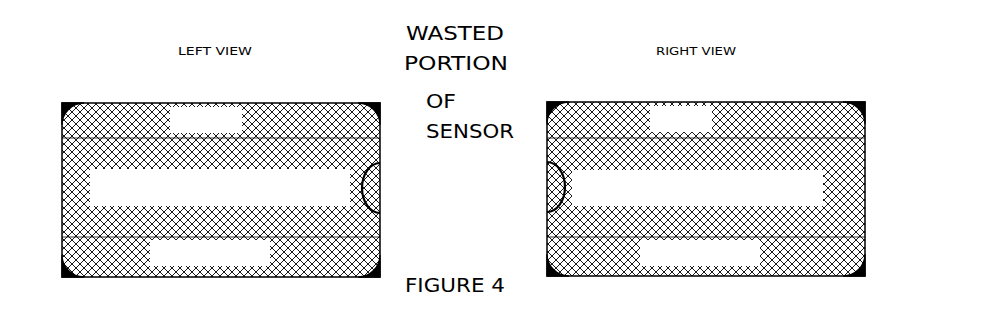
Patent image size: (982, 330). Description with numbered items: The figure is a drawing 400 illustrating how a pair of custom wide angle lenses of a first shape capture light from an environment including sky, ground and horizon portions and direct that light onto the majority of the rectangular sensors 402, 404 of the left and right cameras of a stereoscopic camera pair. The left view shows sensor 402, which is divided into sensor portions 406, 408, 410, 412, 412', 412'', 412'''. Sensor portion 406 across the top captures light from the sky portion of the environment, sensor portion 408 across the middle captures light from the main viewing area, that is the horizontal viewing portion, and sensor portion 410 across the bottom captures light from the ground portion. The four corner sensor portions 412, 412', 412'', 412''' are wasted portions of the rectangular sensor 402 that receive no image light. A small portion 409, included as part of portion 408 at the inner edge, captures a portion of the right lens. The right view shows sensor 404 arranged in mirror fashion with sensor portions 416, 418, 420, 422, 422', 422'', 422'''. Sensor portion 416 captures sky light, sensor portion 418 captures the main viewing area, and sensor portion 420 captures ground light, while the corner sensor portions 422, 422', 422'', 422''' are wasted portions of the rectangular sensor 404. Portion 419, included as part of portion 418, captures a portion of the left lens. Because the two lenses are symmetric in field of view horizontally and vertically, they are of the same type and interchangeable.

The drawing 400 is at (126, 25).
The sensor 402 is at (140, 103).
The sensor 404 is at (612, 103).
The sensor portion 406 is at (307, 110).
The sensor portion 408 is at (96, 184).
The portion 409 is at (370, 190).
The sensor portion 410 is at (210, 259).
The sensor portion 412 is at (389, 106).
The sensor portion 412' is at (47, 108).
The sensor portion 412'' is at (46, 274).
The sensor portion 412''' is at (398, 261).
The sensor portion 416 is at (806, 110).
The sensor portion 418 is at (827, 197).
The portion 419 is at (556, 190).
The sensor portion 420 is at (712, 263).
The sensor portion 422 is at (864, 95).
The sensor portion 422' is at (537, 105).
The sensor portion 422'' is at (555, 285).
The sensor portion 422''' is at (857, 287).